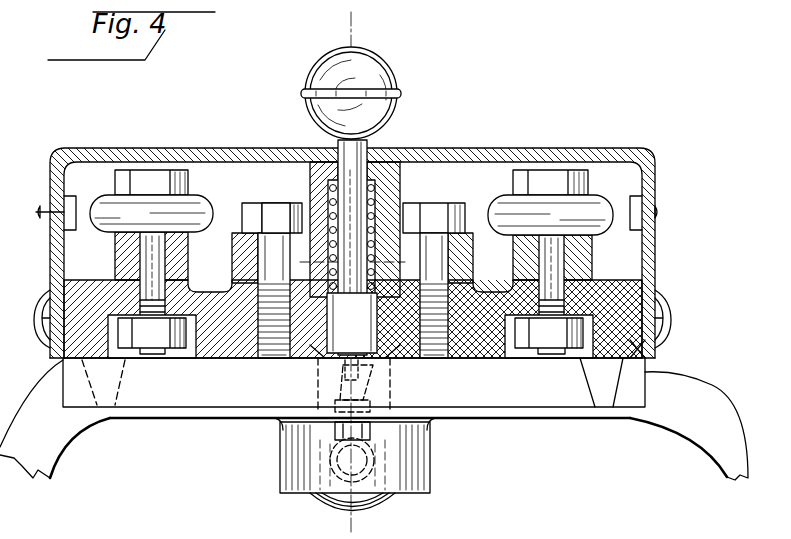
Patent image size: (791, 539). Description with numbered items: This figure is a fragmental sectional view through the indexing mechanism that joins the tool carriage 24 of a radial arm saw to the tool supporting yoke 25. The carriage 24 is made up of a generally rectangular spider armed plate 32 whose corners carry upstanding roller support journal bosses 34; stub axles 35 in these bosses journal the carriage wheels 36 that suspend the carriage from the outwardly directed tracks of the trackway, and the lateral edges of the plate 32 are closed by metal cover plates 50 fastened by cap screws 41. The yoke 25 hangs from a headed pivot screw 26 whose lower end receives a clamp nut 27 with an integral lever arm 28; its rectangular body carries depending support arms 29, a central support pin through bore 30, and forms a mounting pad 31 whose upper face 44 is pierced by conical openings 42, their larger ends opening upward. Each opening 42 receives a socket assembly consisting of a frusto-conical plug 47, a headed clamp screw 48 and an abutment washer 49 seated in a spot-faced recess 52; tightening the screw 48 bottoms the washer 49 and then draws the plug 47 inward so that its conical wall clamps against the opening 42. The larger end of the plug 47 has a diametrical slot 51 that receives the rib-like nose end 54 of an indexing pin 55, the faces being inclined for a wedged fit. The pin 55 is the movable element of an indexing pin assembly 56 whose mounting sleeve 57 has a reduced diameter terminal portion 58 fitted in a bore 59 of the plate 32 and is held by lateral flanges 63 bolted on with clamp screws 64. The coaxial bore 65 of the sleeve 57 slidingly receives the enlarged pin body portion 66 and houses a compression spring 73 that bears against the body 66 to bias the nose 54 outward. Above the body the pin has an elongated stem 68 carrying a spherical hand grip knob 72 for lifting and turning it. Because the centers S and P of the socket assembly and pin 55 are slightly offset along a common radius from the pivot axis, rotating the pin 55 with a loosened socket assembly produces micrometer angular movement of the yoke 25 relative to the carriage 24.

The tool carriage 24 is at (662, 286).
The tool supporting yoke 25 is at (668, 430).
The headed pivot screw 26 is at (398, 262).
The clamp nut 27 is at (281, 462).
The lever arm 28 is at (190, 403).
The support arms 29 is at (55, 455).
The support pin through bore 30 is at (438, 381).
The mounting pad 31 is at (650, 366).
The spider armed plate 32 is at (72, 338).
The roller support journal bosses 34 is at (117, 254).
The stub axles 35 is at (146, 264).
The carriage wheels 36 is at (199, 203).
The cap screws 41 is at (46, 294).
The conical openings 42 is at (127, 371).
The upper face 44 is at (640, 360).
The plug 47 is at (336, 388).
The headed clamp screw 48 is at (335, 436).
The abutment washer 49 is at (407, 434).
The cover plates 50 is at (648, 162).
The slot 51 is at (300, 437).
The spot-faced recess 52 is at (386, 399).
The nose end 54 is at (378, 360).
The indexing pin 55 is at (353, 176).
The indexing pin assembly 56 is at (318, 168).
The mounting sleeve 57 is at (393, 176).
The reduced diameter terminal portion 58 is at (306, 350).
The bore 59 is at (300, 374).
The lateral flanges 63 is at (237, 262).
The clamp screws 64 is at (276, 203).
The coaxial bore 65 is at (330, 200).
The enlarged pin body portion 66 is at (362, 333).
The elongated stem 68 is at (356, 186).
The spherical hand grip knob 72 is at (386, 70).
The compression spring 73 is at (330, 214).
The center of indexing pin P is at (352, 36).
The center of socket assembly S is at (350, 512).